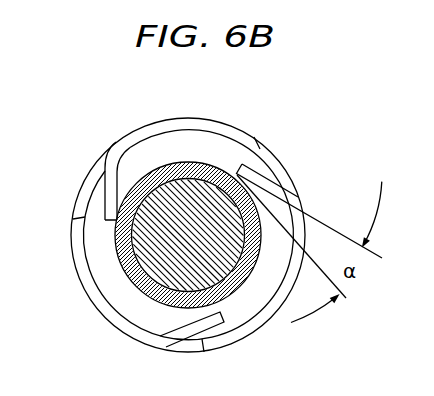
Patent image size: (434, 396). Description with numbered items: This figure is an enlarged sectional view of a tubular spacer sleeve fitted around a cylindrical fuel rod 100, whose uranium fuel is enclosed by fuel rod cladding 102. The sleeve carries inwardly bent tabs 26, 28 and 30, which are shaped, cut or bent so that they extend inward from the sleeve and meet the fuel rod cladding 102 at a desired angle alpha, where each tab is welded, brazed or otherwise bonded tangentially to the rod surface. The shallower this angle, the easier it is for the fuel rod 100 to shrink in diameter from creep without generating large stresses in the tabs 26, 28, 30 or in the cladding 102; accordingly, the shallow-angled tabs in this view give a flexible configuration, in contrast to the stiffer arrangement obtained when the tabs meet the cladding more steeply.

The fuel rod 100 is at (121, 291).
The fuel rod cladding 102 is at (170, 160).
The inwardly bent tab 28 is at (81, 181).
The inwardly bent tab 26 is at (279, 170).
The inwardly bent tab 30 is at (204, 352).